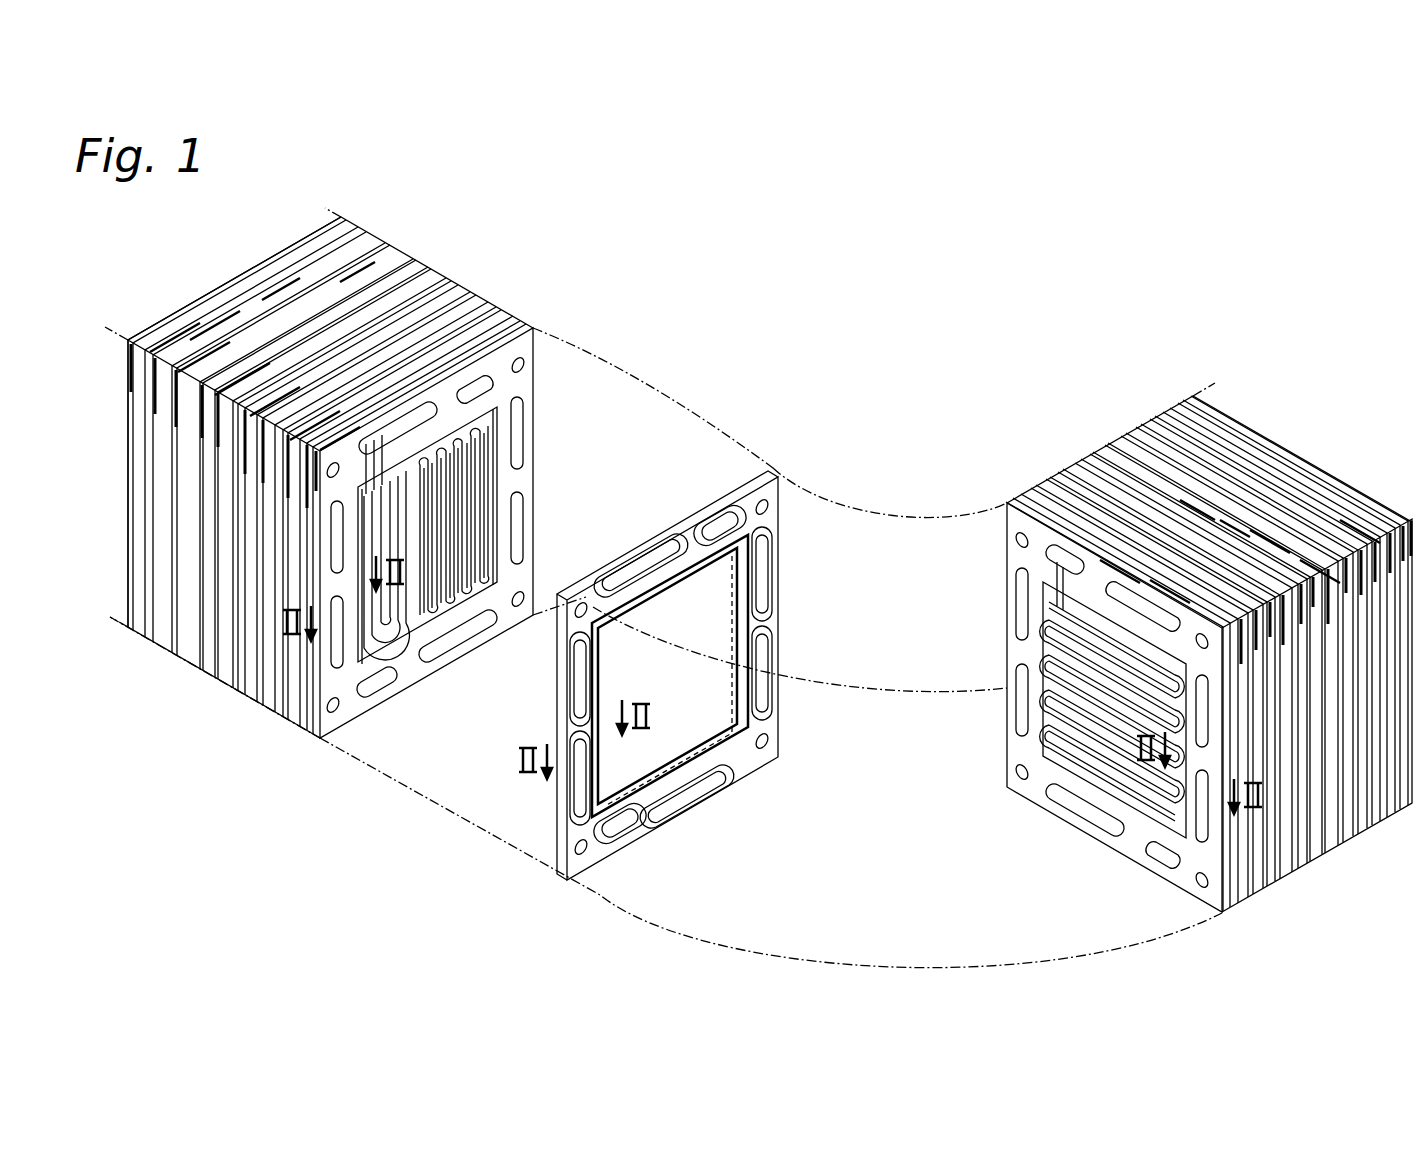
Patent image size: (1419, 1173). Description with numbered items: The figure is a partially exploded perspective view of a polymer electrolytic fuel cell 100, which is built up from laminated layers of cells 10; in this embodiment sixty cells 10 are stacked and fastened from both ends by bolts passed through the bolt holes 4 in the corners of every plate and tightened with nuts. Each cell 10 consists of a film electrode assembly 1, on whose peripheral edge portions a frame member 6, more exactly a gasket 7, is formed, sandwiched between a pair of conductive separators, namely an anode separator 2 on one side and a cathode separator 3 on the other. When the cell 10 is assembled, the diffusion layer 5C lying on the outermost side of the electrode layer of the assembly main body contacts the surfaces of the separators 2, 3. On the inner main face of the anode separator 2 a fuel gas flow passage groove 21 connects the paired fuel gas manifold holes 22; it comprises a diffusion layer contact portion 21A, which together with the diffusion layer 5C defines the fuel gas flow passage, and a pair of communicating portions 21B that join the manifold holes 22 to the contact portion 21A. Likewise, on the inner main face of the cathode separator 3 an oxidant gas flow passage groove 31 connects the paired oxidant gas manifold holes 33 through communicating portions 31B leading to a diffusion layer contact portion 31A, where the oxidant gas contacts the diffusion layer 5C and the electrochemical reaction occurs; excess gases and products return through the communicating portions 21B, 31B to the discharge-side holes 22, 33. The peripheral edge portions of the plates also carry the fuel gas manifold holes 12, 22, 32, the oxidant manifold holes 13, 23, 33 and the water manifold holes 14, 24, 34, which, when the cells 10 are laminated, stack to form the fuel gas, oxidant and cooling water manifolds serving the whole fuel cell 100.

The polymer electrolytic fuel cell 100 is at (1203, 266).
The cell 10 is at (222, 850).
The film electrode assembly 1 is at (252, 893).
The anode separator 2 is at (1063, 818).
The cathode separator 3 is at (320, 738).
The bolt holes 4 is at (523, 367).
The diffusion layer 5C is at (558, 733).
The frame member 6 is at (558, 705).
The gasket 7 is at (745, 507).
The fuel gas manifold hole 12 is at (720, 513).
The oxidant manifold hole 13 is at (653, 552).
The water manifold hole 14 is at (760, 560).
The fuel gas flow passage groove 21 is at (923, 577).
The diffusion layer contact portion 21A is at (1052, 612).
The communicating portions 21B is at (1052, 575).
The fuel gas manifold hole 22 is at (1052, 553).
The oxidant manifold hole 23 is at (1112, 577).
The water manifold hole 24 is at (1023, 633).
The oxidant gas flow passage groove 31 is at (423, 197).
The diffusion layer contact portion 31A is at (445, 415).
The communicating portions 31B is at (408, 460).
The fuel gas manifold hole 32 is at (480, 380).
The oxidant gas manifold hole 33 is at (386, 450).
The water manifold hole 34 is at (520, 432).